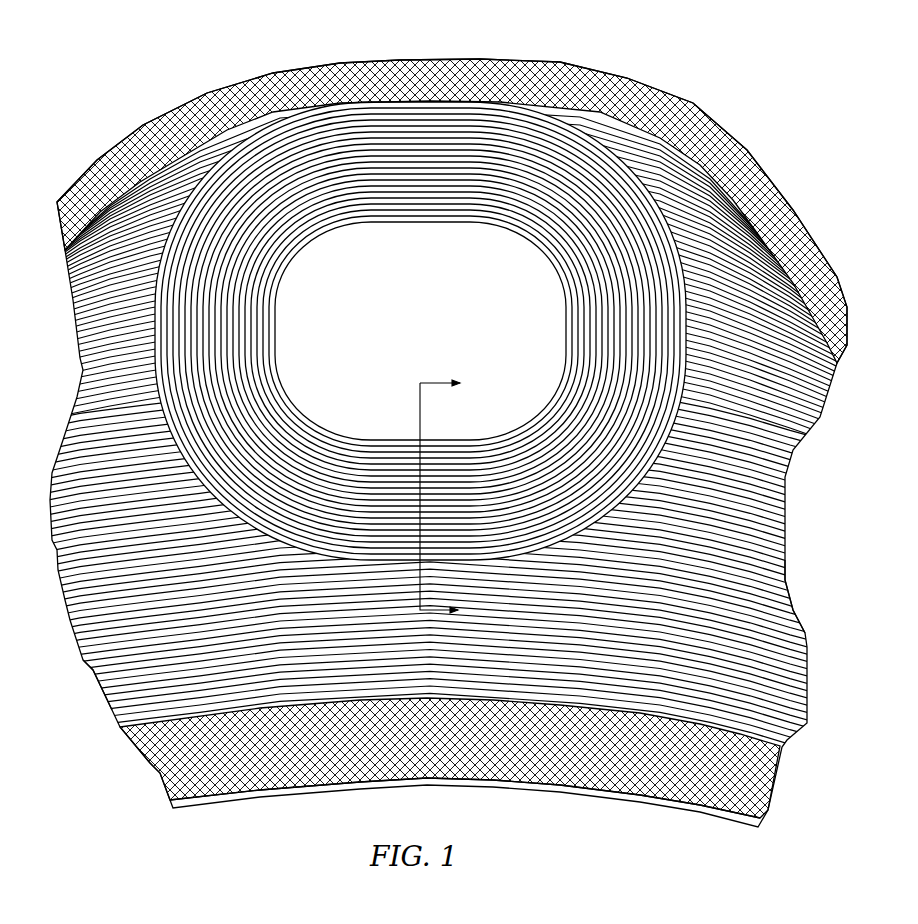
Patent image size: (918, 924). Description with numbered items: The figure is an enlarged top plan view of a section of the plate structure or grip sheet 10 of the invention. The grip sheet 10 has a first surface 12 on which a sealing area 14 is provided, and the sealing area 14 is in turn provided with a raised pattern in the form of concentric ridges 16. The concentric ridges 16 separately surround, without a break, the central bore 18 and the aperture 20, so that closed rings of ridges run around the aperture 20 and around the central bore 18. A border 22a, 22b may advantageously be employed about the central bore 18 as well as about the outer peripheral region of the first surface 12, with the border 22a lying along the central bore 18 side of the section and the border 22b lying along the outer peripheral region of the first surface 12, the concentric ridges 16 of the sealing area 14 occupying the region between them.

The grip sheet 10 is at (142, 775).
The first surface 12 is at (93, 670).
The sealing area 14 is at (788, 598).
The concentric ridges 16 is at (640, 470).
The central bore 18 is at (557, 861).
The aperture 20 is at (422, 313).
The border 22a is at (775, 783).
The border 22b is at (720, 121).